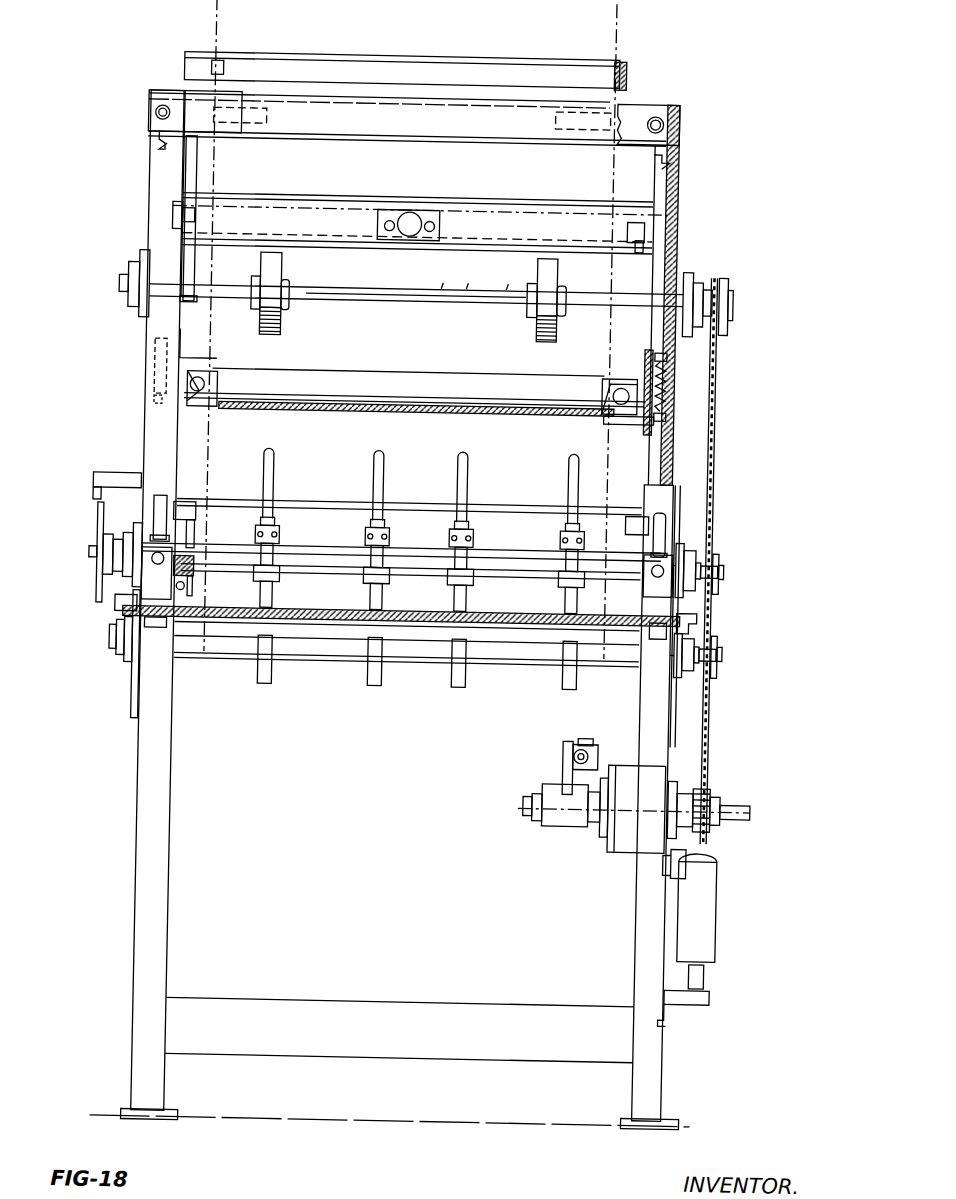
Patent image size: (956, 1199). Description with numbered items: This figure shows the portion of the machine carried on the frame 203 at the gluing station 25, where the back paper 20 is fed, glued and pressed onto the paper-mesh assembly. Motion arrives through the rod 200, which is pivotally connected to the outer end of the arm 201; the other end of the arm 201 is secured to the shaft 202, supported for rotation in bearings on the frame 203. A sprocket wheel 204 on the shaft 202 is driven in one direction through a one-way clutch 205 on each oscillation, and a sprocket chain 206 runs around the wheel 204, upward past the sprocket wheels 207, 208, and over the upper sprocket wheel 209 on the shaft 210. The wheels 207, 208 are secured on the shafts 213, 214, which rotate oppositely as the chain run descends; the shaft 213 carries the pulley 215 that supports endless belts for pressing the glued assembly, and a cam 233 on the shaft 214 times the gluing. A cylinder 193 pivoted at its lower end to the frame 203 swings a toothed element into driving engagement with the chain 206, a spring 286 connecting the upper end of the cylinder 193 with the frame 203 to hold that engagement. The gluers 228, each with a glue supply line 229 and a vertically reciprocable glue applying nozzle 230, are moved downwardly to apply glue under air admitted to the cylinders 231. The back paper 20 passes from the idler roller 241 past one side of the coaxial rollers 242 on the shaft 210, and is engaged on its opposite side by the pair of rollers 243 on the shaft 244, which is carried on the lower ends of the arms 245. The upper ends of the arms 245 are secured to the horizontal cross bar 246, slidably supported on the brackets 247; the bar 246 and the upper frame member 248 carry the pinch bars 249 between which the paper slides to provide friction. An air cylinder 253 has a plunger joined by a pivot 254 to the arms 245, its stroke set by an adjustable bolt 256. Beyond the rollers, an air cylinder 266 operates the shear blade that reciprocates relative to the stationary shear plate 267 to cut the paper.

The back paper 20 is at (206, 44).
The gluing station 25 is at (612, 496).
The cylinder 193 is at (720, 922).
The rod 200 is at (588, 748).
The arm 201 is at (566, 778).
The shaft 202 is at (524, 818).
The frame 203 is at (176, 793).
The sprocket wheel 204 is at (708, 792).
The one-way clutch 205 is at (628, 846).
The sprocket chain 206 is at (712, 716).
The sprocket wheel 207 is at (718, 644).
The sprocket wheel 208 is at (708, 560).
The upper sprocket wheel 209 is at (722, 292).
The shaft 210 is at (456, 302).
The shaft 213 is at (112, 656).
The shaft 214 is at (88, 564).
The pulley 215 is at (276, 685).
The gluer 228 is at (344, 596).
The glue supply line 229 is at (372, 471).
The glue applying nozzle 230 is at (258, 622).
The cylinder 231 is at (234, 500).
The cam 233 is at (96, 530).
The idler roller 241 is at (615, 78).
The rollers 242 is at (276, 332).
The rollers 243 is at (278, 290).
The shaft 244 is at (386, 302).
The arms 245 is at (170, 263).
The horizontal cross bar 246 is at (524, 106).
The brackets 247 is at (140, 165).
The upper frame member 248 is at (350, 120).
The pinch bars 249 is at (232, 110).
The air cylinder 253 is at (420, 208).
The pivot 254 is at (166, 228).
The adjustable bolt 256 is at (190, 215).
The air cylinder 266 is at (240, 376).
The stationary shear plate 267 is at (446, 364).
The spring 286 is at (695, 854).